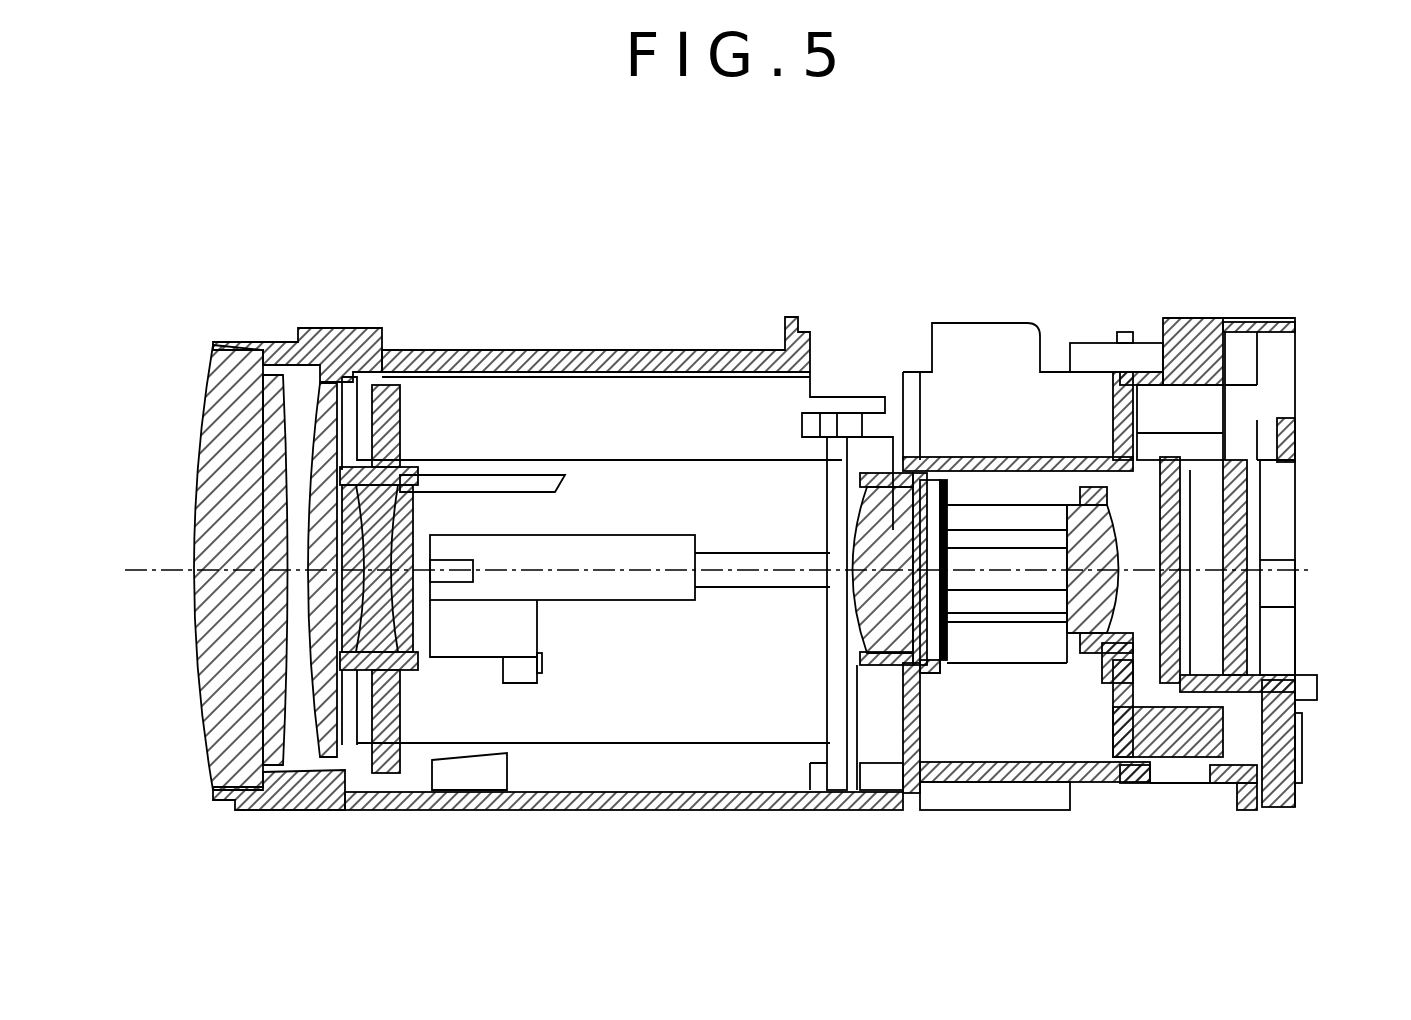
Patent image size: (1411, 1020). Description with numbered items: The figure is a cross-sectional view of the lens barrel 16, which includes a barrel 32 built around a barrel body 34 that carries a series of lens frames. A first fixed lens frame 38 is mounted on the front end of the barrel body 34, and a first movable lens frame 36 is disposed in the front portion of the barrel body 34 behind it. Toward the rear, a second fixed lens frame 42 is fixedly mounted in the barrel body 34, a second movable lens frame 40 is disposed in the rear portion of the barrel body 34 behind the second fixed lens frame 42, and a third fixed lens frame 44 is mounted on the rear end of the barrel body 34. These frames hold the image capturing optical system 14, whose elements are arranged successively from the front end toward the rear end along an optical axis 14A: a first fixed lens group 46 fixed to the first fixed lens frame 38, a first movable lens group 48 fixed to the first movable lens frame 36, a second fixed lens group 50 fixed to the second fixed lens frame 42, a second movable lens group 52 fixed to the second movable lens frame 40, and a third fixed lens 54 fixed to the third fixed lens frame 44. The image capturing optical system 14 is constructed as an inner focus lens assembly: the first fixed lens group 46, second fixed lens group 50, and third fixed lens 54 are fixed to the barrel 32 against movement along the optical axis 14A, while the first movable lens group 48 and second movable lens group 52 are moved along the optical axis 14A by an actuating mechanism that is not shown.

The image capturing optical system 14 is at (128, 697).
The optical axis 14A is at (630, 573).
The lens barrel 16 is at (873, 186).
The barrel 32 is at (594, 298).
The barrel body 34 is at (705, 348).
The first movable lens frame 36 is at (400, 430).
The first fixed lens frame 38 is at (258, 340).
The second movable lens frame 40 is at (1103, 673).
The second fixed lens frame 42 is at (893, 545).
The third fixed lens frame 44 is at (1297, 434).
The first fixed lens group 46 is at (205, 437).
The first movable lens group 48 is at (432, 556).
The second fixed lens group 50 is at (960, 525).
The second movable lens group 52 is at (1063, 600).
The third fixed lens 54 is at (1175, 537).